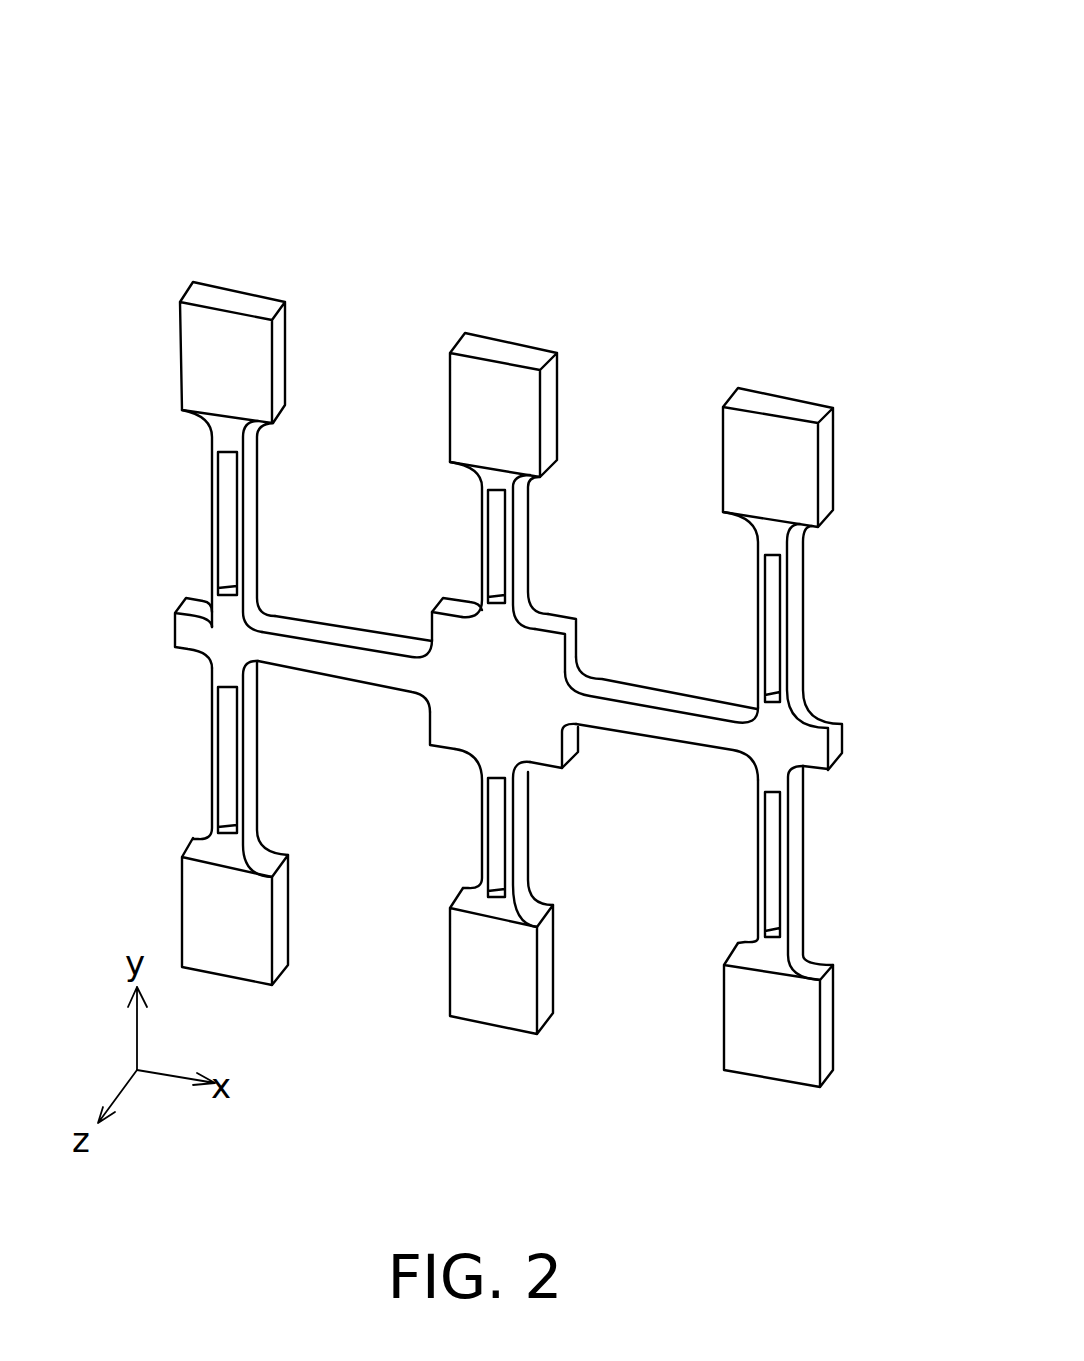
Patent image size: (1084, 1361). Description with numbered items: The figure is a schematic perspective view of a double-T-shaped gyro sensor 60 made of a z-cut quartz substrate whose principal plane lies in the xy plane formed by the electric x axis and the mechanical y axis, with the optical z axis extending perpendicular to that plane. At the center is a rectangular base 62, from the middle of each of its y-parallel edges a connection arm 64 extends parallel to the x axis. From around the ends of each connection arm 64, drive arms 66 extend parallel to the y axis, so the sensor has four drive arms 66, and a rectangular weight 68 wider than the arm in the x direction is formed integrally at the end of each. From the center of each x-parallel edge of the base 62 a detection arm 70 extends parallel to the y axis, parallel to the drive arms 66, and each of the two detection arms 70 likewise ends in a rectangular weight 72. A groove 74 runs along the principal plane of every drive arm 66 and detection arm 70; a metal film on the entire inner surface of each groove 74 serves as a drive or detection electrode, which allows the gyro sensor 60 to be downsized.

The double-T-shaped gyro sensor 60 is at (579, 195).
The base 62 is at (430, 713).
The connection arm 64 is at (328, 617).
The drive arm 66 is at (210, 476).
The weight 68 is at (226, 280).
The detection arm 70 is at (529, 517).
The weight 72 is at (517, 333).
The groove 74 is at (228, 530).